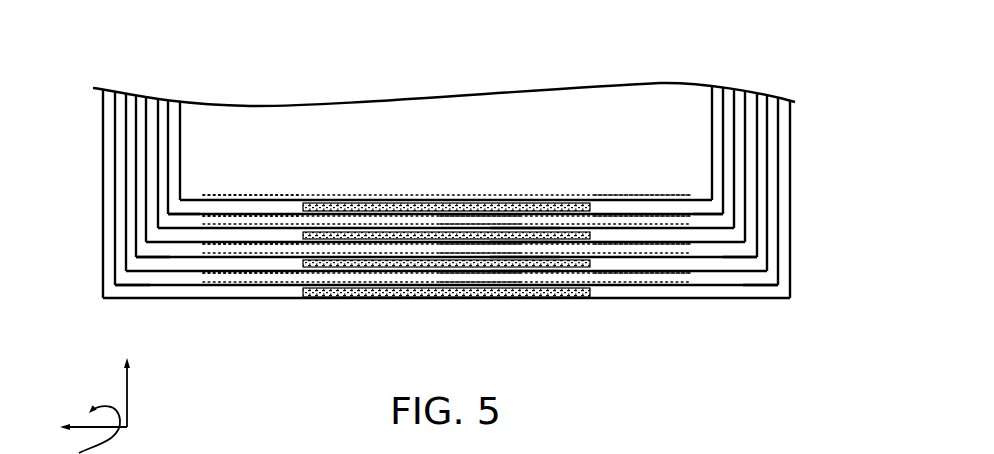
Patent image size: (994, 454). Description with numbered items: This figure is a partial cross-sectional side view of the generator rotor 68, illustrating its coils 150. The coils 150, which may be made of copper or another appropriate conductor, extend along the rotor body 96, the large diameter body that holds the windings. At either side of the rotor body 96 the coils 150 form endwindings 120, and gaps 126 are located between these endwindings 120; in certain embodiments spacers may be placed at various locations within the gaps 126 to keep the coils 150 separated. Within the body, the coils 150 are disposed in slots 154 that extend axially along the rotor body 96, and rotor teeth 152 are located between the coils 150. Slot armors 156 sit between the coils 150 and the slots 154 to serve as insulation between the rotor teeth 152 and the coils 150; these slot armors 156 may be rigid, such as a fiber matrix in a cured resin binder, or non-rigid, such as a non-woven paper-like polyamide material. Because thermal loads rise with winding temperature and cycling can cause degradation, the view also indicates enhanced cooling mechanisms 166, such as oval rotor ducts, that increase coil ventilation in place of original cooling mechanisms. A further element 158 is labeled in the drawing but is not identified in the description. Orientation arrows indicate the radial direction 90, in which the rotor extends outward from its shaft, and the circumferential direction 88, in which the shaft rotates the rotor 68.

The rotor 68 is at (116, 50).
The endwindings 120 is at (80, 124).
The coils 150 is at (110, 230).
The gaps 126 is at (170, 227).
The rotor teeth 152 is at (263, 282).
The enhanced cooling mechanisms 166 is at (415, 288).
The slot armors 156 is at (476, 282).
The slots 154 is at (528, 272).
The ply end portion 158 is at (225, 295).
The rotor body 96 is at (489, 129).
The radial direction 90 is at (128, 398).
The circumferential direction 88 is at (118, 438).